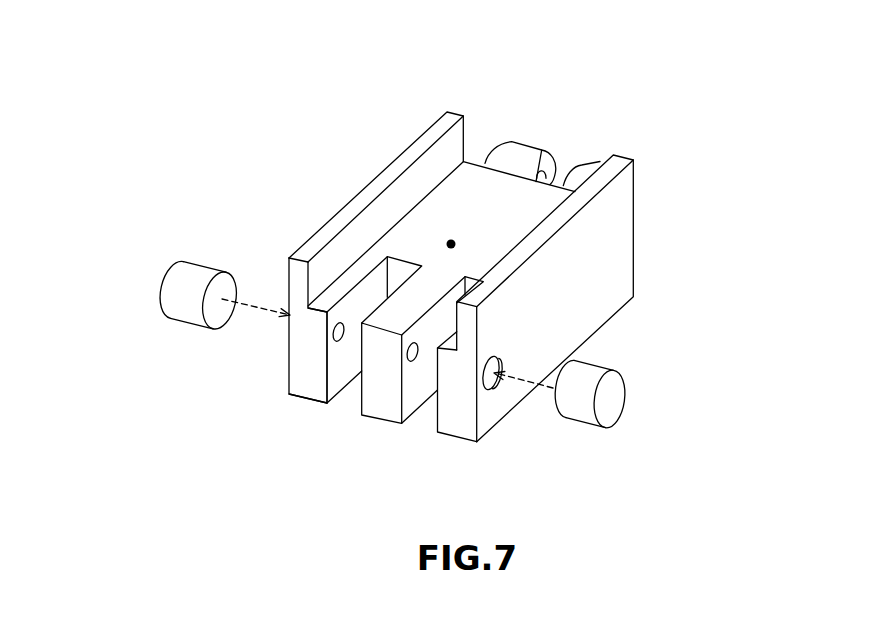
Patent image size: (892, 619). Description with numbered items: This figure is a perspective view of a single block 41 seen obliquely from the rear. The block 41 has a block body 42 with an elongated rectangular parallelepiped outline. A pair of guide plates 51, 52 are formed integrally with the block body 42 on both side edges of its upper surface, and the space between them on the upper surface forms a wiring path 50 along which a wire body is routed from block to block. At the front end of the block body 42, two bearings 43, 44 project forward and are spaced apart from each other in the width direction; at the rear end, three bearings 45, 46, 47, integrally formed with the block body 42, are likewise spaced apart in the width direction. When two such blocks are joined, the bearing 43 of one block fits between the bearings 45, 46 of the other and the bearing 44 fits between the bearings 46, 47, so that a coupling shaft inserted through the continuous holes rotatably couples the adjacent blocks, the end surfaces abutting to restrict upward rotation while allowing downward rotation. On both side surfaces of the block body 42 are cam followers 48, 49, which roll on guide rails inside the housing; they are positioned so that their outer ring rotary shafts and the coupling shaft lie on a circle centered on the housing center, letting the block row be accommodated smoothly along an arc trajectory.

The block 41 is at (647, 213).
The block body 42 is at (617, 290).
The bearing 43 is at (526, 146).
The bearing 44 is at (590, 163).
The bearing 45 is at (308, 373).
The bearing 46 is at (383, 397).
The bearing 47 is at (462, 423).
The cam follower 48 is at (612, 405).
The cam follower 49 is at (166, 272).
The wiring path 50 is at (451, 238).
The guide plate 51 is at (612, 158).
The guide plate 52 is at (433, 130).